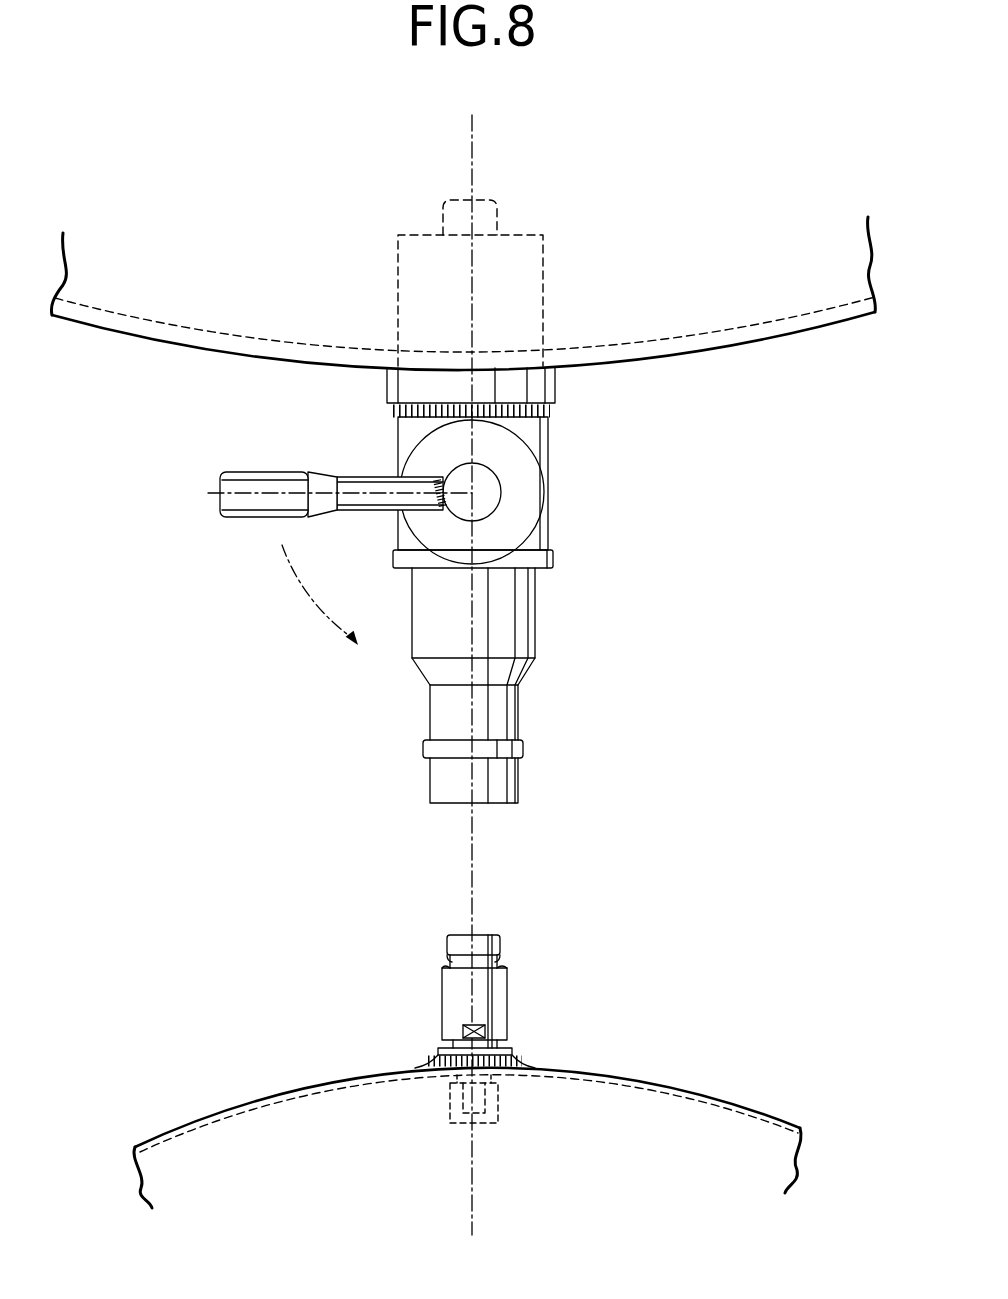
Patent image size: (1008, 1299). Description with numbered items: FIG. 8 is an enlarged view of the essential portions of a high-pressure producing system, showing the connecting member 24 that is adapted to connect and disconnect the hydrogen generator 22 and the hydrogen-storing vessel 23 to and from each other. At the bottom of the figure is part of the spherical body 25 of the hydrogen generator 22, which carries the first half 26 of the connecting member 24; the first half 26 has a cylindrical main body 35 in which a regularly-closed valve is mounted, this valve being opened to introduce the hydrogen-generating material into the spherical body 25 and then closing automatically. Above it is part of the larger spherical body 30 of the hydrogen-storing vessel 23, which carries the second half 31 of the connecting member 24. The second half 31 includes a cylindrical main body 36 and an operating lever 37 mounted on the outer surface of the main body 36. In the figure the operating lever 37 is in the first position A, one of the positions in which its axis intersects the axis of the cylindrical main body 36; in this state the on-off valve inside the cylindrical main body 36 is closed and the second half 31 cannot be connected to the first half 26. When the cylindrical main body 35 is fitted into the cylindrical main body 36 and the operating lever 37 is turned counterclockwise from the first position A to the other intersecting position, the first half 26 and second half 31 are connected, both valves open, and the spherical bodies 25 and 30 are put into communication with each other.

The hydrogen generator 22 is at (713, 1088).
The hydrogen-storing vessel 23 is at (776, 345).
The connecting member 24 is at (548, 760).
The spherical body 25 is at (600, 1100).
The first half of the connecting member 26 is at (459, 1001).
The spherical body 30 is at (675, 320).
The second half of the connecting member 31 is at (434, 585).
The cylindrical main body 35 is at (500, 1000).
The cylindrical main body 36 is at (523, 600).
The operating lever 37 is at (267, 480).
The first position A is at (203, 513).